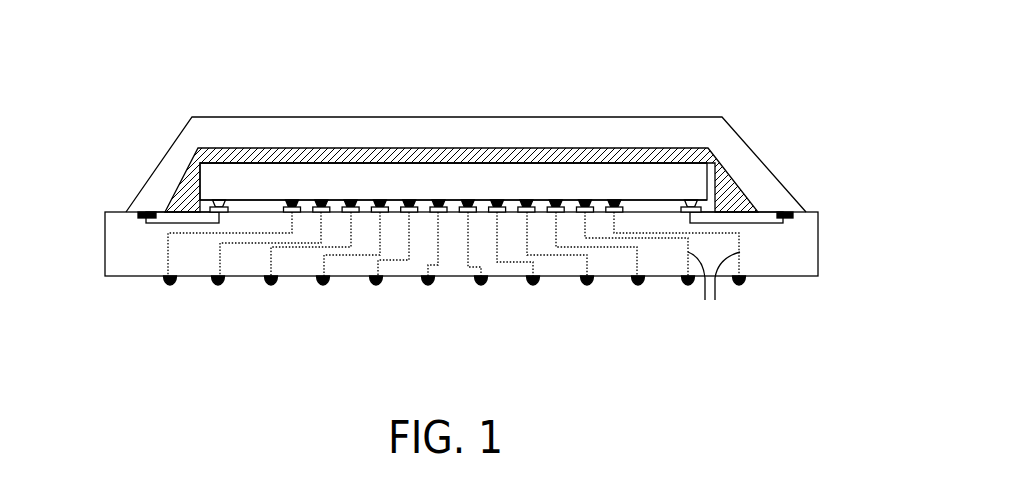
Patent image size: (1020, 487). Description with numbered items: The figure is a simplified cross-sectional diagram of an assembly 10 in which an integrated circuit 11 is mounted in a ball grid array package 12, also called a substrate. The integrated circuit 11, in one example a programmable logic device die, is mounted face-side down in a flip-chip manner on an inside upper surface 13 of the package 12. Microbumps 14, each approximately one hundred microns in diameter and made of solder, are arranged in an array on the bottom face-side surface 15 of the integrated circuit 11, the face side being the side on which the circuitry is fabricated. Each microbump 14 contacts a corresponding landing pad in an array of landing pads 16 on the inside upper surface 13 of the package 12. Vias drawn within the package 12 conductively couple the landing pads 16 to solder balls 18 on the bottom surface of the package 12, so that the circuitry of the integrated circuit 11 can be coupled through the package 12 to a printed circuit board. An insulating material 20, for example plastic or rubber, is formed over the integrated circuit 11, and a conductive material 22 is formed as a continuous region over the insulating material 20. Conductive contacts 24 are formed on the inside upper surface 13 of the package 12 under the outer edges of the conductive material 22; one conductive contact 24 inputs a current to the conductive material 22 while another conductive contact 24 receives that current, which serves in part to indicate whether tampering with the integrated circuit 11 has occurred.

The assembly 10 is at (598, 64).
The integrated circuit 11 is at (610, 189).
The package 12 is at (105, 250).
The inside upper surface 13 is at (201, 209).
The microbumps 14 is at (684, 201).
The face-side surface 15 is at (643, 199).
The landing pads 16 is at (682, 209).
The solder balls 18 is at (213, 285).
The insulating material 20 is at (197, 165).
The conductive material 22 is at (710, 131).
The conductive contacts 24 is at (818, 180).